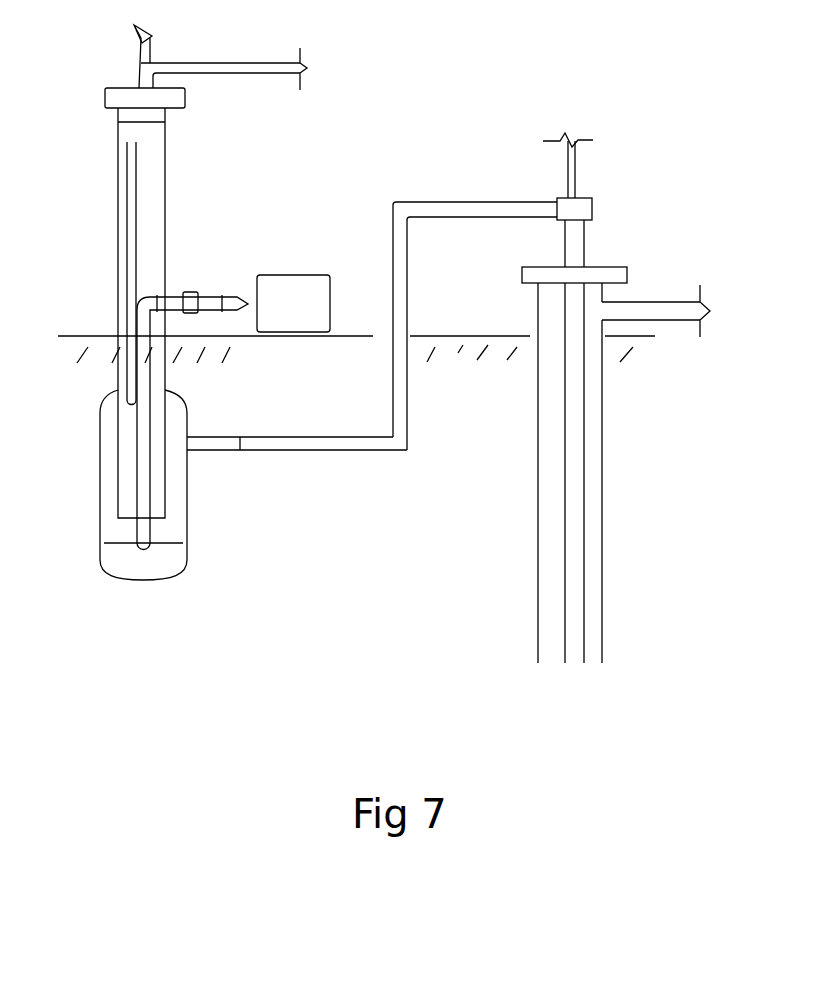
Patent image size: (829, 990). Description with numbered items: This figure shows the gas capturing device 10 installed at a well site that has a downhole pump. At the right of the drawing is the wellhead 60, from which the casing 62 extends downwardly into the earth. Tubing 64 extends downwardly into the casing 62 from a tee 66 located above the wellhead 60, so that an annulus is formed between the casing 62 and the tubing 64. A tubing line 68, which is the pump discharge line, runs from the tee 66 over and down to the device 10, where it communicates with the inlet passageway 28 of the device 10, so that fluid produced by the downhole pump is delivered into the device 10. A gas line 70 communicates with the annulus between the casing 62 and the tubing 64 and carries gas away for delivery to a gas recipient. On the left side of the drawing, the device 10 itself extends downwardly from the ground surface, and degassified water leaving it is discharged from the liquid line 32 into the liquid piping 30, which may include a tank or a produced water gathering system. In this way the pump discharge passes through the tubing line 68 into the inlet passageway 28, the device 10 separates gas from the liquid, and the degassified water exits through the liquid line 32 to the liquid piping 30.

The gas capturing device 10 is at (90, 72).
The inlet passageway 28 is at (212, 438).
The liquid piping 30 is at (300, 275).
The liquid line 32 is at (132, 432).
The wellhead 60 is at (641, 396).
The casing 62 is at (602, 520).
The tubing 64 is at (583, 478).
The tee 66 is at (610, 187).
The tubing line 68 is at (480, 218).
The gas line 70 is at (657, 302).